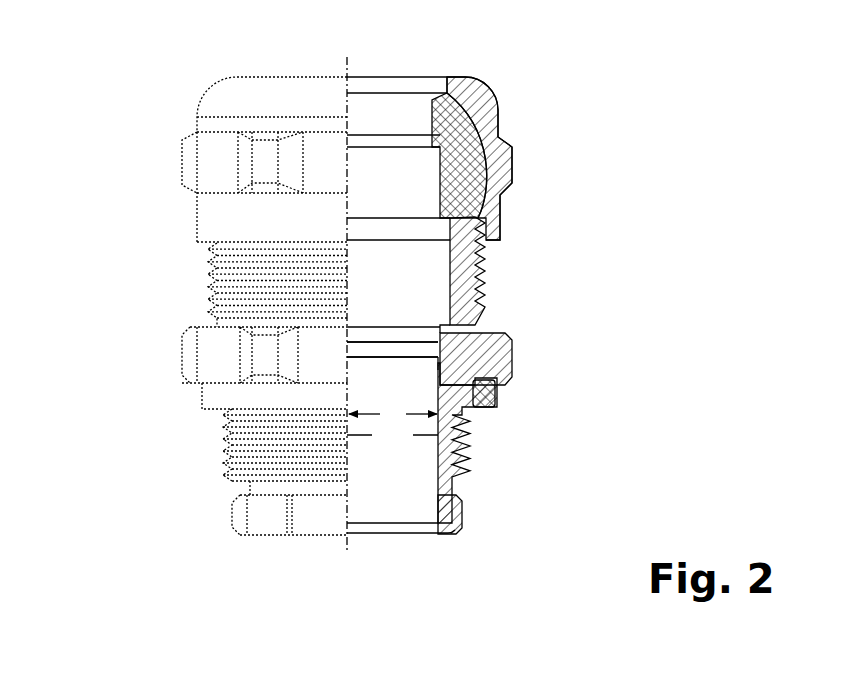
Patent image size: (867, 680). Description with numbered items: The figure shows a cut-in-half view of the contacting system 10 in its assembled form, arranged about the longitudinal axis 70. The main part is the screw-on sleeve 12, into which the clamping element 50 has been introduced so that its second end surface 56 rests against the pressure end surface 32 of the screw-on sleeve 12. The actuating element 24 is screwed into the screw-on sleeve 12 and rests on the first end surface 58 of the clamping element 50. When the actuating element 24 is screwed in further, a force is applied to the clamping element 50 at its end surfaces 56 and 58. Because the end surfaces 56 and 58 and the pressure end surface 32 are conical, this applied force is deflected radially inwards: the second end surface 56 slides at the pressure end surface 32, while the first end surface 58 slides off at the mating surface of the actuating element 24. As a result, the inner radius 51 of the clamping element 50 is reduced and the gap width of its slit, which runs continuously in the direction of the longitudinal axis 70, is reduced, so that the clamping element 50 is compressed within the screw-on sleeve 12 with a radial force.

The contacting system 10 is at (146, 452).
The screw-on sleeve 12 is at (516, 368).
The actuating element 24 is at (465, 513).
The pressure end surface 32 is at (446, 368).
The clamping element 50 is at (446, 378).
The inner radius 51 is at (393, 427).
The second end surface 56 is at (442, 365).
The first end surface 58 is at (455, 433).
The longitudinal axis 70 is at (347, 57).